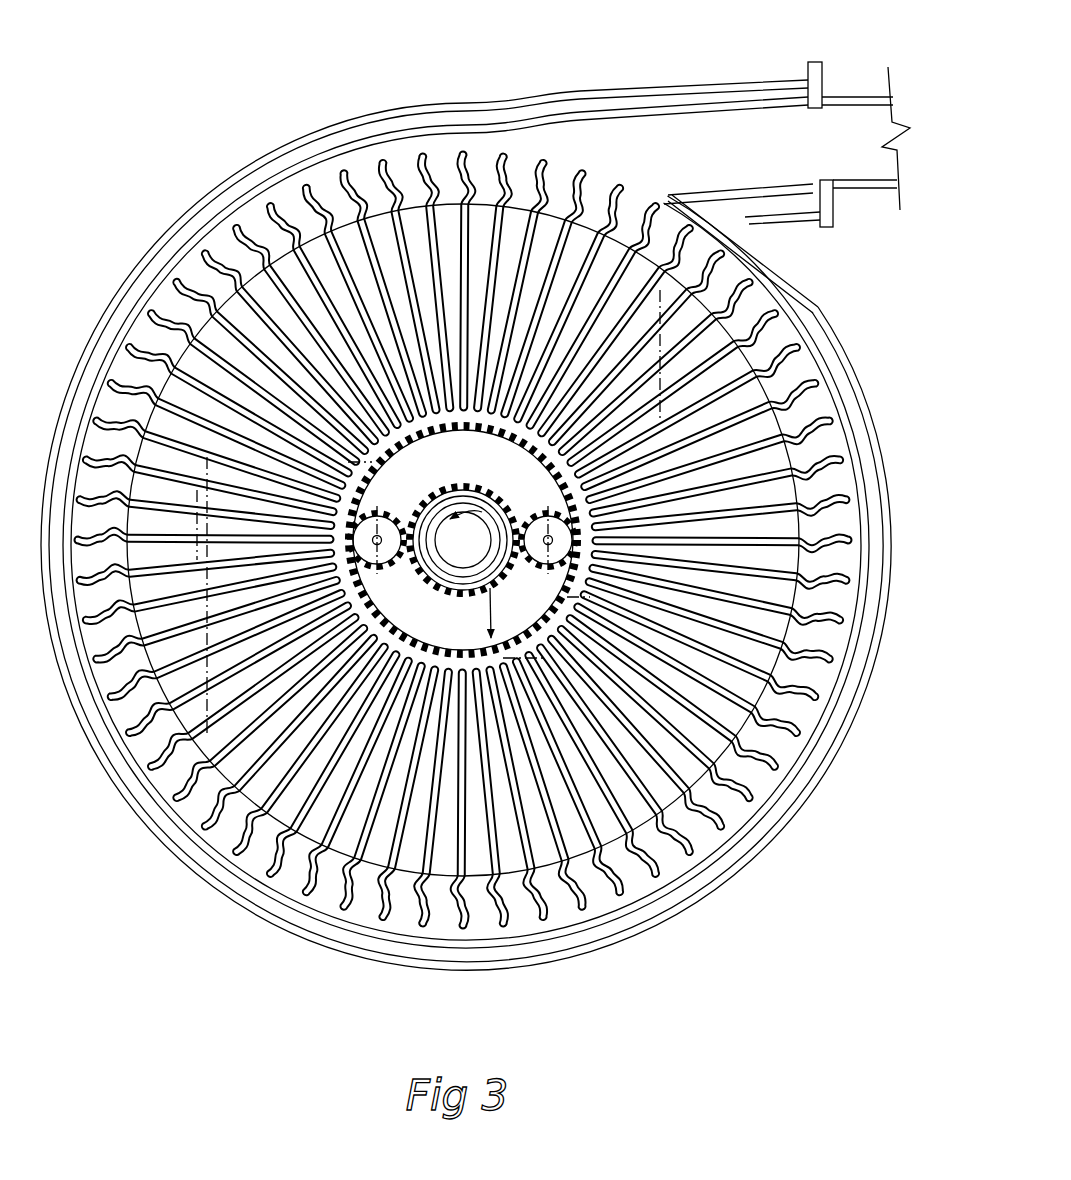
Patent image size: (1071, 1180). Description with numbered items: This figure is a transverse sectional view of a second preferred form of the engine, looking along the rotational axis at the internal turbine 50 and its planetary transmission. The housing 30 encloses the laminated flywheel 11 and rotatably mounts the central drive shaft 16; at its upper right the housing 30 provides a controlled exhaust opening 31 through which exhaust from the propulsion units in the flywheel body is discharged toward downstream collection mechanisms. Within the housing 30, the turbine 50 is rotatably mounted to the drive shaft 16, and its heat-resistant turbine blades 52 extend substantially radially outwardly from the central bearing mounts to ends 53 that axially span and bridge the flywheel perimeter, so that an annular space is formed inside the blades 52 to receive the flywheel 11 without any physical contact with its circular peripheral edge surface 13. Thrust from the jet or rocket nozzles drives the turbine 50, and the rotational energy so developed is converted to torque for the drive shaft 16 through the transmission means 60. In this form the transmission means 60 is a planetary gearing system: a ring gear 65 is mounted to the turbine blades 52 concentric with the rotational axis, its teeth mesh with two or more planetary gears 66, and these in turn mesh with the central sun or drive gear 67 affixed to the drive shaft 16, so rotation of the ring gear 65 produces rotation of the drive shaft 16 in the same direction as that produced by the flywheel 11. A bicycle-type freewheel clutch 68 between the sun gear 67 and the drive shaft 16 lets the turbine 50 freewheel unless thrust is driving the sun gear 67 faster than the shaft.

The flywheel 11 is at (462, 522).
The peripheral edge surface 13 is at (413, 870).
The drive shaft 16 is at (488, 500).
The housing 30 is at (774, 851).
The exhaust opening 31 is at (848, 148).
The internal turbine 50 is at (451, 151).
The turbine blades 52 is at (228, 823).
The blade ends 53 is at (683, 860).
The transmission means 60 is at (488, 567).
The ring gear 65 is at (428, 432).
The planetary gears 66 is at (547, 578).
The sun gear 67 is at (424, 570).
The freewheel clutch 68 is at (443, 496).